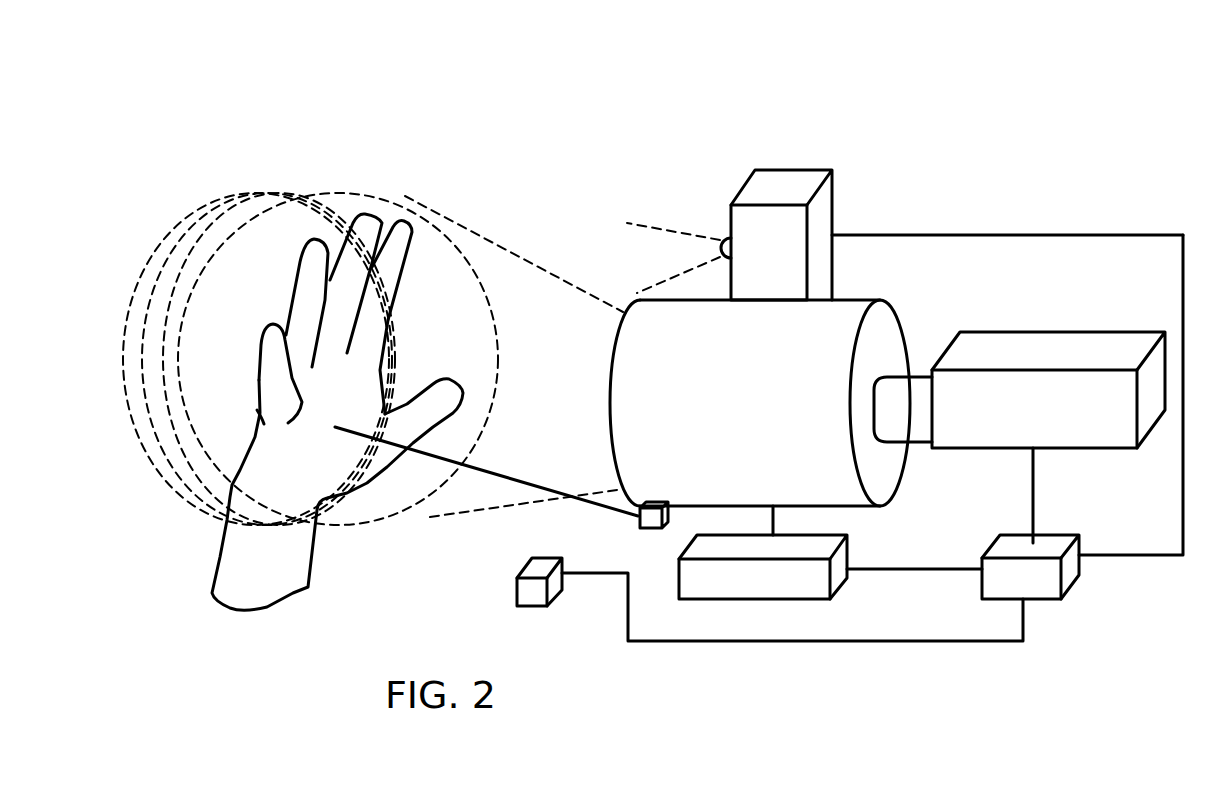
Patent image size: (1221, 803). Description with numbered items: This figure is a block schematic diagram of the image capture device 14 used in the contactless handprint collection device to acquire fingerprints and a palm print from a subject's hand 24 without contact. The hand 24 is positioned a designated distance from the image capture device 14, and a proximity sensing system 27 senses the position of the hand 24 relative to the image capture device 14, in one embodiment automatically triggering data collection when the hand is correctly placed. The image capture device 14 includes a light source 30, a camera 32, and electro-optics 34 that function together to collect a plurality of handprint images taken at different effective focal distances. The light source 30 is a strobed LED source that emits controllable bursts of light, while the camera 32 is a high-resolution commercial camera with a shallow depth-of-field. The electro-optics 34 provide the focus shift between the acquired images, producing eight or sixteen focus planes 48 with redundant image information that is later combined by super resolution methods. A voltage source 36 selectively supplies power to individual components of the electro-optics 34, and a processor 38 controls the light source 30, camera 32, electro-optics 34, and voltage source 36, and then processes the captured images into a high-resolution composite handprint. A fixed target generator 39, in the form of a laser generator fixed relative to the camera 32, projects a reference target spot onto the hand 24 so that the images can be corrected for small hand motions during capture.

The image capture device 14 is at (923, 139).
The hand 24 is at (225, 570).
The proximity sensing system 27 is at (517, 592).
The light source 30 is at (836, 204).
The camera 32 is at (1063, 330).
The electro-optics 34 is at (858, 300).
The voltage source 36 is at (755, 600).
The processor 38 is at (1045, 602).
The fixed target generator 39 is at (652, 530).
The focus planes 48 is at (345, 215).